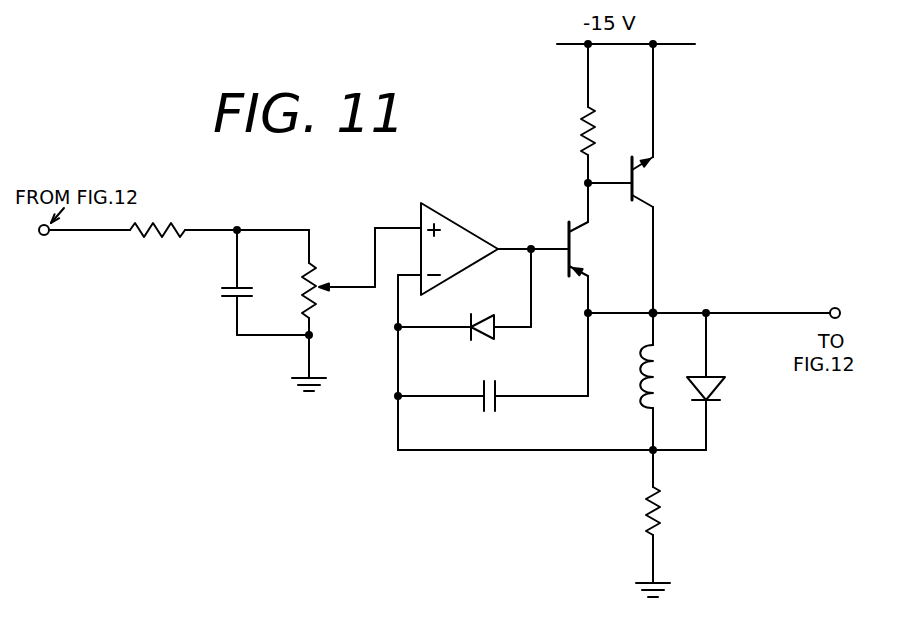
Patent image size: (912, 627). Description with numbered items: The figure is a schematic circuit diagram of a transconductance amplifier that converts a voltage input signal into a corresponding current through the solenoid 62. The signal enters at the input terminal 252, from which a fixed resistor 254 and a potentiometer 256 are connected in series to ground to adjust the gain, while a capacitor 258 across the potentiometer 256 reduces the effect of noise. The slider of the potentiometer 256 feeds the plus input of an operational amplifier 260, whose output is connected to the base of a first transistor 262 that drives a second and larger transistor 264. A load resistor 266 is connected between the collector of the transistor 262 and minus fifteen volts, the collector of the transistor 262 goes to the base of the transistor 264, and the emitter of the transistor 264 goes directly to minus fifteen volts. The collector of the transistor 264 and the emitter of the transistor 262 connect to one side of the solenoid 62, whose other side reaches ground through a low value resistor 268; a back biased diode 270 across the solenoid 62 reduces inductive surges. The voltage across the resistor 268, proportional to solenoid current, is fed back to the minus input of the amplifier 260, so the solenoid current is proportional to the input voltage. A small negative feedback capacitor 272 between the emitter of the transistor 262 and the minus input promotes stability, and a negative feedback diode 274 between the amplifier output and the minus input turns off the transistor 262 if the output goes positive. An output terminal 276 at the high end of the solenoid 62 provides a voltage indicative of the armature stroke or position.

The input terminal 252 is at (42, 236).
The fixed resistor 254 is at (155, 240).
The potentiometer 256 is at (311, 265).
The capacitor 258 is at (218, 287).
The operational amplifier 260 is at (450, 222).
The first transistor 262 is at (577, 241).
The second transistor 264 is at (643, 183).
The load resistor 266 is at (582, 129).
The low value resistor 268 is at (662, 515).
The back biased diode 270 is at (726, 390).
The negative feedback capacitor 272 is at (487, 414).
The negative feedback diode 274 is at (482, 340).
The output terminal 276 is at (836, 307).
The solenoid 62 is at (648, 385).